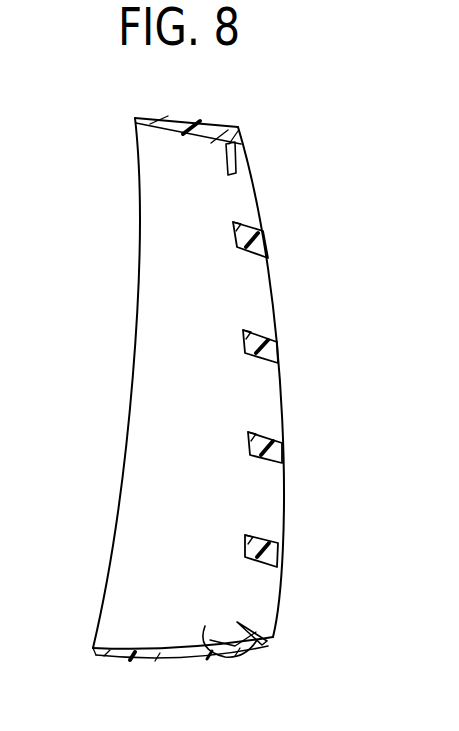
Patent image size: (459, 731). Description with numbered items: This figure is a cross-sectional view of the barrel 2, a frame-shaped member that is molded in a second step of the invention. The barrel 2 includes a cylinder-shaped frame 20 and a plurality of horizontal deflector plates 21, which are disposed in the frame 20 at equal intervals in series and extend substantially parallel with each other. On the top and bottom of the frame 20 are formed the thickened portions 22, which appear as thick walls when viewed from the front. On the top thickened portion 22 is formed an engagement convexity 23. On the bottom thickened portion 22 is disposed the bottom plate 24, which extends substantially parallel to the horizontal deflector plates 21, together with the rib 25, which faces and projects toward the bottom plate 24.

The barrel 2 is at (135, 327).
The cylinder-shaped frame 20 is at (157, 250).
The horizontal deflector plates 21 is at (255, 243).
The thickened portions 22 is at (211, 123).
The engagement convexity 23 is at (236, 168).
The bottom plate 24 is at (256, 624).
The rib 25 is at (240, 668).